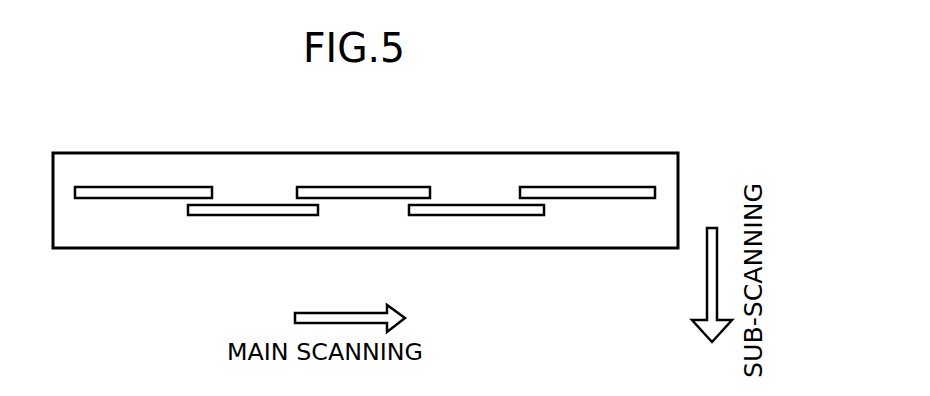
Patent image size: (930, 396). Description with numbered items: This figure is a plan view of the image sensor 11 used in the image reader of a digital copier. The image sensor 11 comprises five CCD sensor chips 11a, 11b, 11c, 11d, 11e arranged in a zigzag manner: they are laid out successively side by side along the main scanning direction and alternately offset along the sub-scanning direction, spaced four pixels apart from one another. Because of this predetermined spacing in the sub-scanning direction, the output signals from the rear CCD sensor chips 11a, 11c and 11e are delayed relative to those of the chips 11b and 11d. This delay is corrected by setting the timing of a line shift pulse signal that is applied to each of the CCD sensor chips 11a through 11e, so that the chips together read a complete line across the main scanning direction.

The image sensor 11 is at (633, 152).
The CCD sensor chip 11a is at (133, 198).
The CCD sensor chip 11b is at (246, 215).
The CCD sensor chip 11c is at (353, 198).
The CCD sensor chip 11d is at (461, 215).
The CCD sensor chip 11e is at (570, 198).